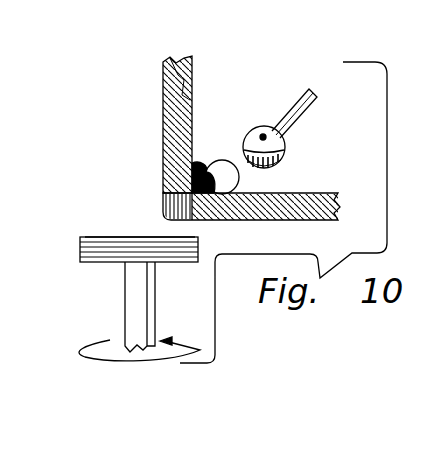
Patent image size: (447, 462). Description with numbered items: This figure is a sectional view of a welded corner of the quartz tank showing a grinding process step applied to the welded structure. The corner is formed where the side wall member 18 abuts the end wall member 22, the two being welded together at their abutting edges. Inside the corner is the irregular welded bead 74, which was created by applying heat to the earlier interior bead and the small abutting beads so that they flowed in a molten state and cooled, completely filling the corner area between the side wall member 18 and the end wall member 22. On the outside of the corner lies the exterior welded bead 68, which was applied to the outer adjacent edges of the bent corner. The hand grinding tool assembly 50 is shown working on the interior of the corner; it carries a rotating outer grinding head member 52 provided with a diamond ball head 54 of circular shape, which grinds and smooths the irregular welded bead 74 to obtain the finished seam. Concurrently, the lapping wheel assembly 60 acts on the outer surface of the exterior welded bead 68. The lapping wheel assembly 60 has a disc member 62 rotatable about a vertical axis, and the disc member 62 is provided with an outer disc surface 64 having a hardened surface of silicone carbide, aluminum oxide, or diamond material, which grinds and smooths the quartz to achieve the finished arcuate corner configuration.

The side wall member 18 is at (312, 193).
The end wall member 22 is at (192, 86).
The hand grinding tool assembly 50 is at (313, 98).
The grinding head member 52 is at (272, 140).
The diamond ball head 54 is at (285, 158).
The lapping wheel assembly 60 is at (112, 275).
The disc member 62 is at (80, 252).
The outer disc surface 64 is at (117, 237).
The exterior welded bead 68 is at (166, 200).
The irregular welded bead 74 is at (232, 196).